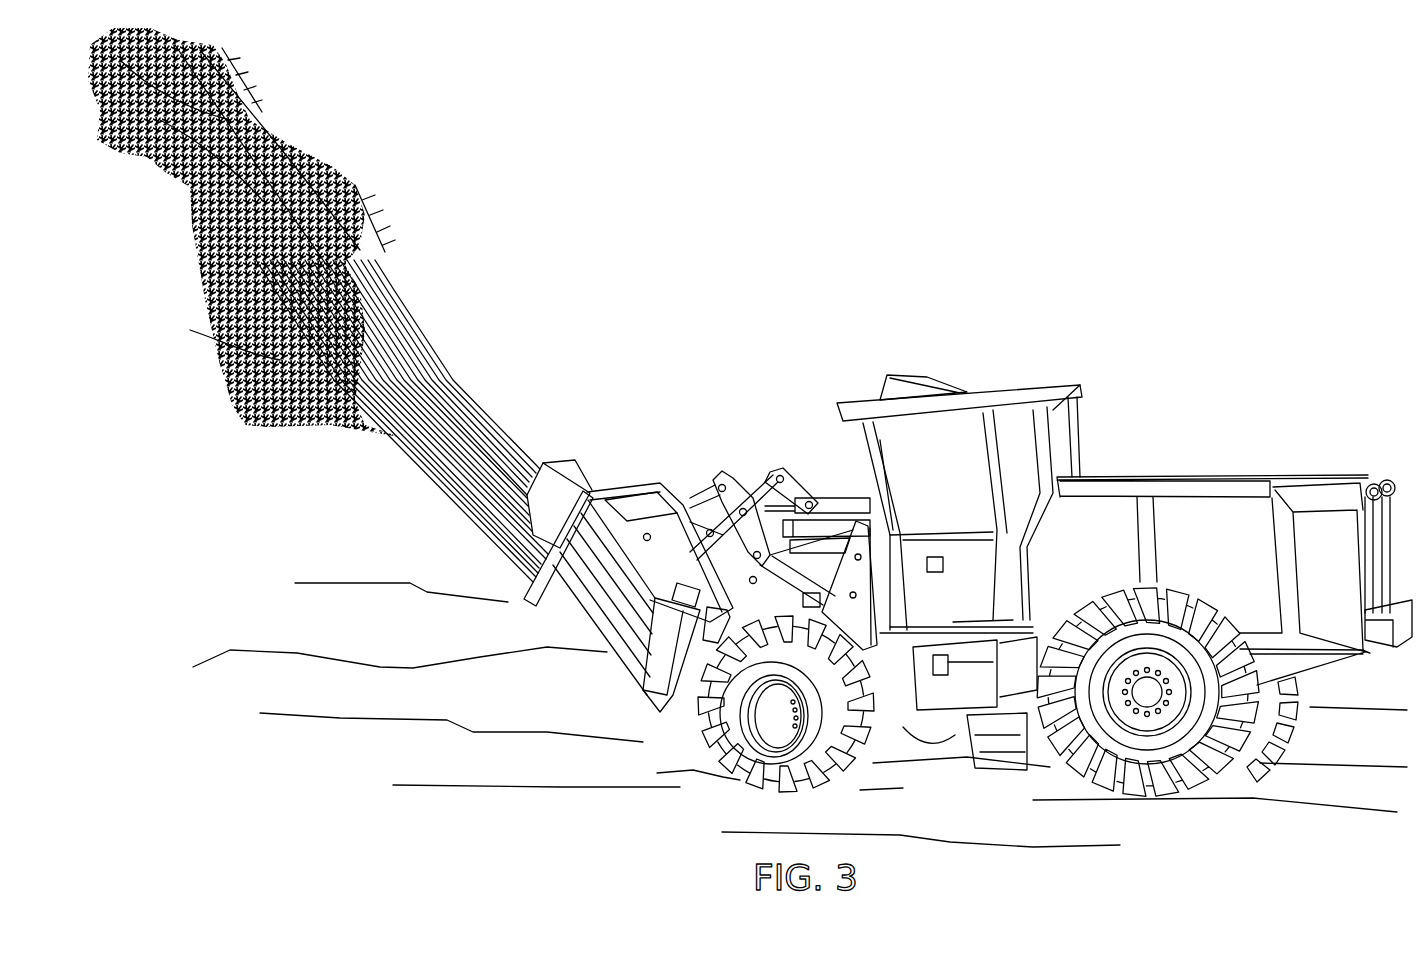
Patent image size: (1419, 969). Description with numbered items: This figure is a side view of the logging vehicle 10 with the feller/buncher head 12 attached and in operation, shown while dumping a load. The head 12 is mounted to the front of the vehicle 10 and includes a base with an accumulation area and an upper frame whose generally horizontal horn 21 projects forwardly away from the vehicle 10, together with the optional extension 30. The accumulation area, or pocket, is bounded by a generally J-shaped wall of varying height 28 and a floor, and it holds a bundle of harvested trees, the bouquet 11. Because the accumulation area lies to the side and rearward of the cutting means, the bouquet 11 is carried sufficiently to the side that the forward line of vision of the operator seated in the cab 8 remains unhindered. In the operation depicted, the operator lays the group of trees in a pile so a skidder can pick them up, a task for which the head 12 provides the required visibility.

The cab 8 is at (900, 443).
The logging vehicle 10 is at (1083, 440).
The bouquet of harvested trees 11 is at (467, 488).
The feller/buncher head 12 is at (660, 487).
The horn 21 is at (533, 585).
The J-shaped wall of varying height 28 is at (653, 675).
The extension 30 is at (573, 477).